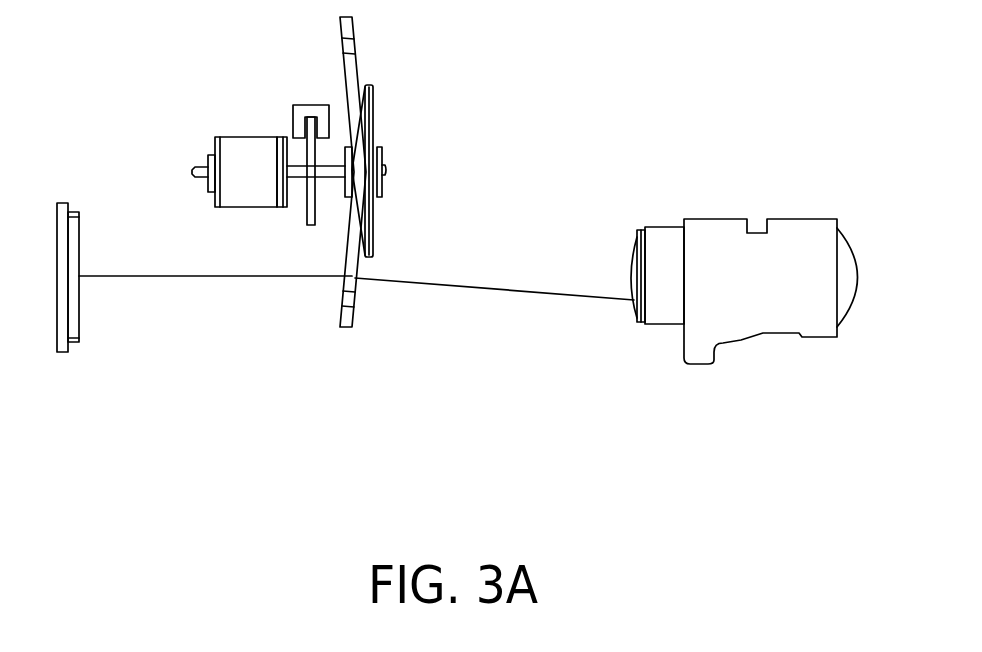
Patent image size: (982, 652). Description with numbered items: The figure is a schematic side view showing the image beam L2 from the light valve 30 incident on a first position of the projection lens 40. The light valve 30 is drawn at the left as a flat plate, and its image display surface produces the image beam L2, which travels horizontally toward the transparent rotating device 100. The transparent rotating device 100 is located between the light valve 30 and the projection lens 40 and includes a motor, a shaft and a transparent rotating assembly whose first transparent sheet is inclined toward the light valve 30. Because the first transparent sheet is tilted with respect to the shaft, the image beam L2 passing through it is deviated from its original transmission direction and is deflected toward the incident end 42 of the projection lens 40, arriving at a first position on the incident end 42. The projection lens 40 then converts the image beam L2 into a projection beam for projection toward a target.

The light valve 30 is at (62, 207).
The image beam L2 is at (198, 278).
The transparent rotating device 100 is at (235, 143).
The incident end 42 is at (634, 260).
The projection lens 40 is at (790, 233).